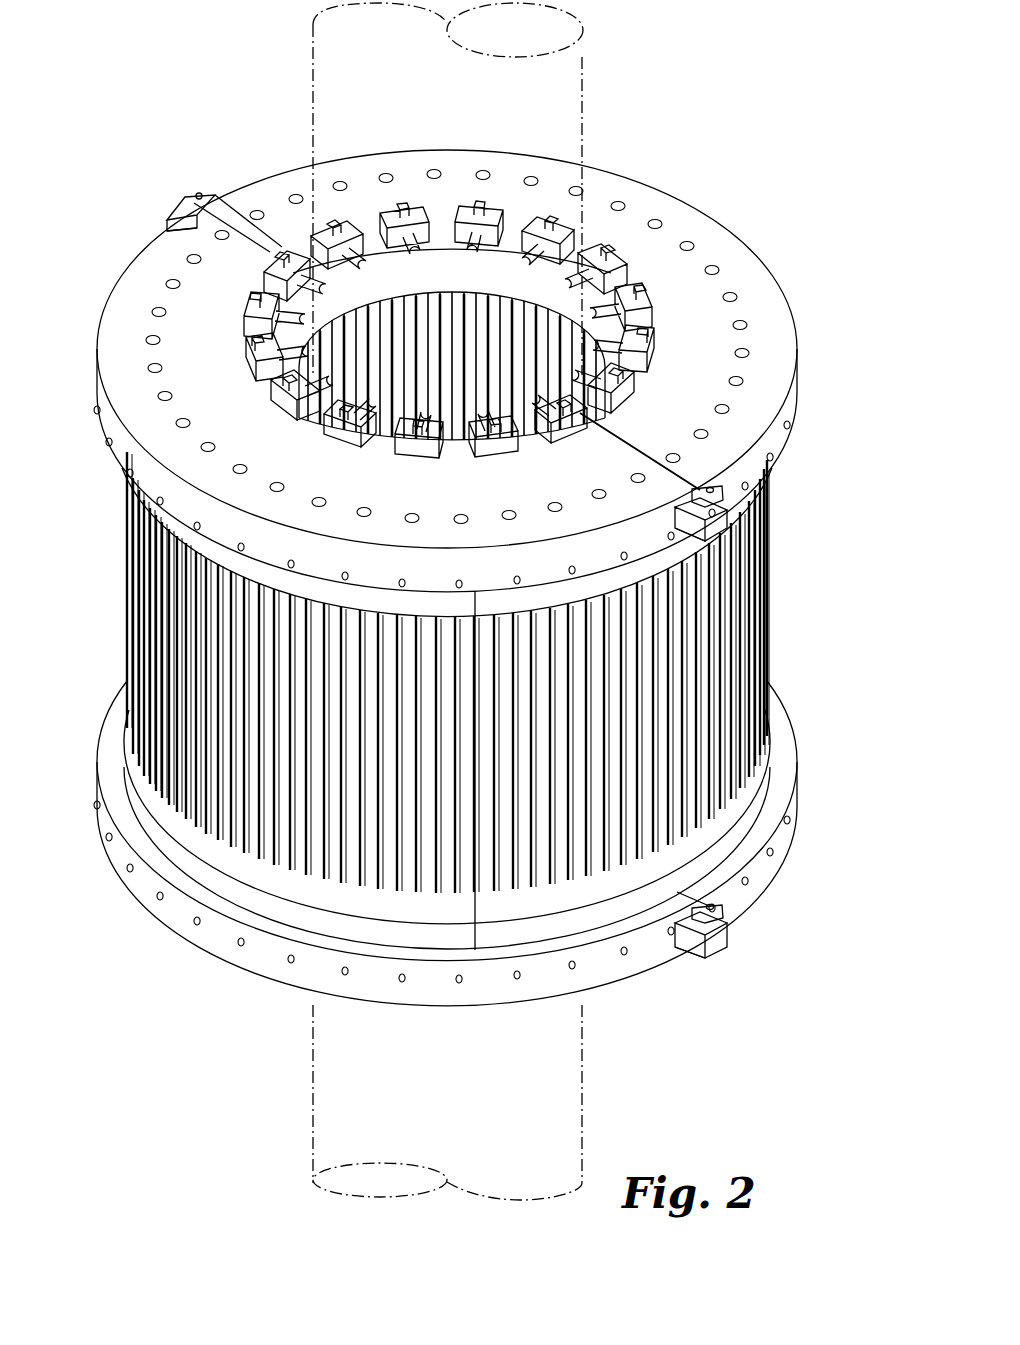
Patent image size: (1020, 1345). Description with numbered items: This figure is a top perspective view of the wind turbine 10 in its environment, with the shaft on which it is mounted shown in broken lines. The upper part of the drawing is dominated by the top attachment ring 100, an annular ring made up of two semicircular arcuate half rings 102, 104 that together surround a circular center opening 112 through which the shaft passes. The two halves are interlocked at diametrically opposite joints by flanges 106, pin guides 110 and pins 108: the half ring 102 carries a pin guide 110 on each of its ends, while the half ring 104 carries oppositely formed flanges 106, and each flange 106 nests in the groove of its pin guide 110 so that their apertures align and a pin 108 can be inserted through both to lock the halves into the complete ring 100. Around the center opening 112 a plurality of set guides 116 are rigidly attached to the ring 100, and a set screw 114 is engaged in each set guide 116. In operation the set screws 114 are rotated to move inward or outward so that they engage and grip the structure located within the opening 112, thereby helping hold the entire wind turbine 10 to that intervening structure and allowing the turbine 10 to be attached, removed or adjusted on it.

The wind turbine 10 is at (456, 601).
The top attachment ring 100 is at (762, 300).
The half ring 102 is at (797, 393).
The half ring 104 is at (100, 427).
The flange 106 is at (177, 212).
The pin 108 is at (199, 190).
The pin guide 110 is at (196, 196).
The center opening 112 is at (520, 344).
The set screw 114 is at (418, 458).
The set guide 116 is at (404, 461).